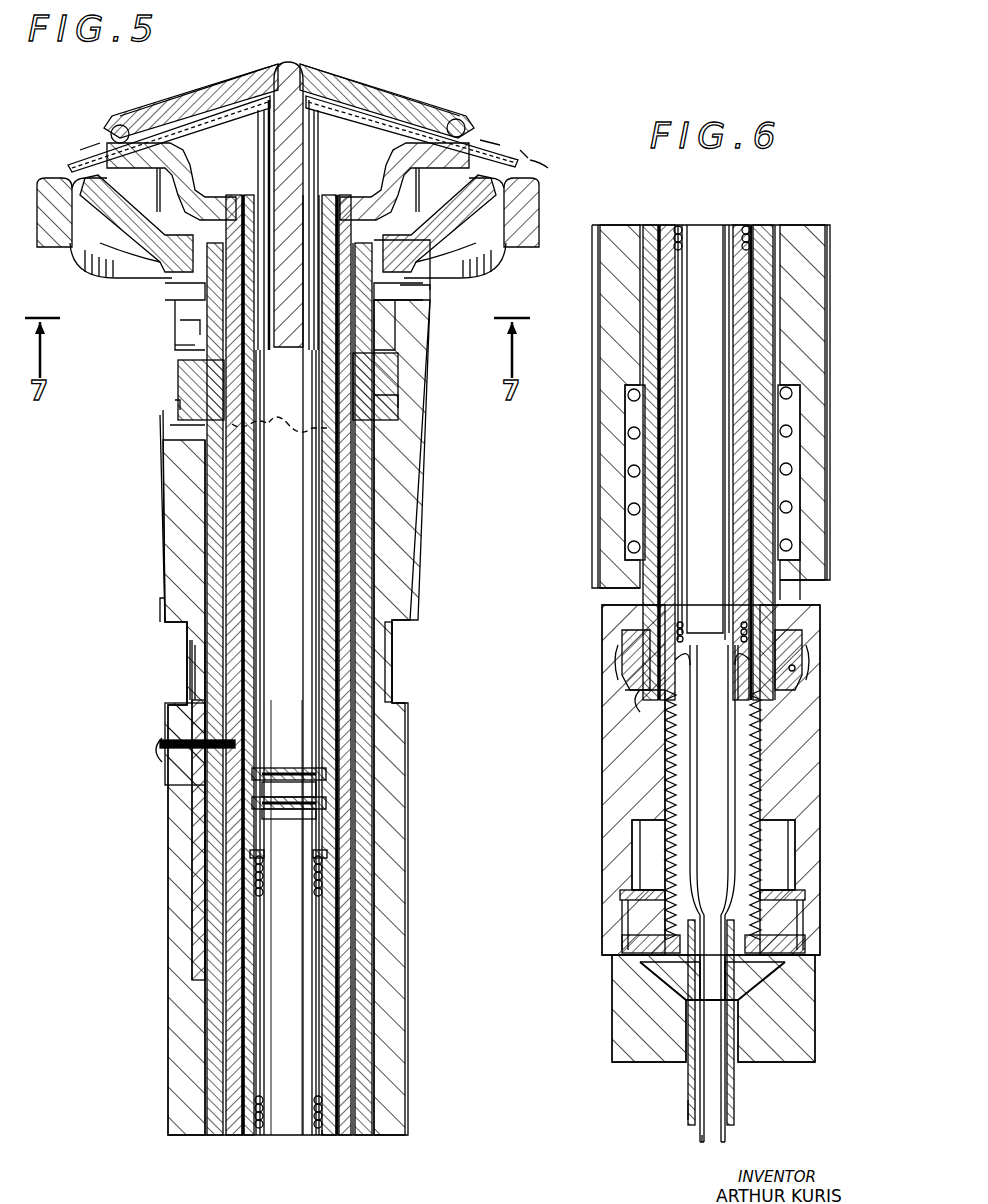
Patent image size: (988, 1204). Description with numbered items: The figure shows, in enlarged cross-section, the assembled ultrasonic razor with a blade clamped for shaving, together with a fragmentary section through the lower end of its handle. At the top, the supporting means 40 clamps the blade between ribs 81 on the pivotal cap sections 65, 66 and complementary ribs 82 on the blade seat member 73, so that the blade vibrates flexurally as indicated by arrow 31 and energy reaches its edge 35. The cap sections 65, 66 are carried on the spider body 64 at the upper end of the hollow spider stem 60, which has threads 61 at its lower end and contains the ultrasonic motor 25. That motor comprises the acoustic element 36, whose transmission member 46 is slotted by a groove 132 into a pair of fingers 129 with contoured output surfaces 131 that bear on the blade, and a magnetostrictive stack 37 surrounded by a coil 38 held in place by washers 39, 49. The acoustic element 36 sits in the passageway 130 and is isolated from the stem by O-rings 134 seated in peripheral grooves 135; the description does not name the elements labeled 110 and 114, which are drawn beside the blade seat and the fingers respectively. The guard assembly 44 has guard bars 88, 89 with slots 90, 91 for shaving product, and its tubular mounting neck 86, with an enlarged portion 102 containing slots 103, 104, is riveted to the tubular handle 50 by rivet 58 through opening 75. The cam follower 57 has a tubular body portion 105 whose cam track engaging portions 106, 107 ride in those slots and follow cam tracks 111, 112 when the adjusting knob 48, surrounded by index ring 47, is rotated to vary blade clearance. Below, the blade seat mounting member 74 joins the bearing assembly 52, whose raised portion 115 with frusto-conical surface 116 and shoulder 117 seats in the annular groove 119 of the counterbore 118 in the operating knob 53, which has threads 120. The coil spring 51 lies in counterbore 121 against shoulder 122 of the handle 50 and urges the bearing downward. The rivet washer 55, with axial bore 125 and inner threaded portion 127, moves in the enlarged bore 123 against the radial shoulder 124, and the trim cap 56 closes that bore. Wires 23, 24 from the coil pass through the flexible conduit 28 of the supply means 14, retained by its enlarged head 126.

In FIG. 6, the supply means 14 is at (690, 1110).
In FIG. 6, the wire 23 is at (720, 1138).
In FIG. 6, the wire 24 is at (702, 1140).
In FIG. 5, the ultrasonic motor 25 is at (322, 578).
In FIG. 6, the ultrasonic motor 25 is at (728, 336).
In FIG. 6, the flexible conduit 28 is at (736, 1095).
In FIG. 5, the arrow 31 is at (48, 166).
In FIG. 5, the edge 35 is at (553, 152).
In FIG. 5, the acoustic element 36 is at (330, 735).
In FIG. 6, the acoustic element 36 is at (730, 528).
In FIG. 5, the magnetostrictive stack 37 is at (288, 1135).
In FIG. 6, the magnetostrictive stack 37 is at (712, 232).
In FIG. 5, the coil 38 is at (345, 1130).
In FIG. 6, the coil 38 is at (660, 230).
In FIG. 5, the washer 39 is at (330, 852).
In FIG. 5, the supporting means 40 is at (112, 130).
In FIG. 5, the guard assembly 44 is at (540, 232).
In FIG. 5, the transmission member 46 is at (312, 664).
In FIG. 5, the index ring 47 is at (395, 688).
In FIG. 5, the adjusting knob 48 is at (418, 600).
In FIG. 6, the washer 49 is at (672, 636).
In FIG. 5, the tubular handle 50 is at (410, 1058).
In FIG. 6, the tubular handle 50 is at (598, 410).
In FIG. 6, the coil spring 51 is at (792, 472).
In FIG. 6, the bearing assembly 52 is at (795, 596).
In FIG. 6, the operating knob 53 is at (810, 796).
In FIG. 6, the rivet washer 55 is at (792, 952).
In FIG. 6, the trim cap 56 is at (805, 1023).
In FIG. 5, the cam follower 57 is at (195, 326).
In FIG. 5, the rivet 58 is at (178, 752).
In FIG. 5, the spider stem 60 is at (330, 925).
In FIG. 6, the spider stem 60 is at (668, 228).
In FIG. 6, the threads 61 is at (762, 745).
In FIG. 5, the spider body 64 is at (300, 64).
In FIG. 5, the cap section 65 is at (355, 84).
In FIG. 5, the cap section 66 is at (252, 74).
In FIG. 5, the blade seat member 73 is at (524, 156).
In FIG. 5, the blade seat mounting member 74 is at (345, 830).
In FIG. 6, the blade seat mounting member 74 is at (774, 228).
In FIG. 5, the opening 75 is at (210, 727).
In FIG. 5, the ribs 81 is at (122, 136).
In FIG. 5, the ribs 82 is at (82, 150).
In FIG. 5, the tubular mounting neck 86 is at (232, 824).
In FIG. 5, the guard bar 88 is at (522, 192).
In FIG. 5, the guard bar 89 is at (55, 192).
In FIG. 5, the slots 90 is at (460, 249).
In FIG. 5, the slots 91 is at (50, 245).
In FIG. 5, the enlarged portion 102 is at (170, 294).
In FIG. 5, the slot 103 is at (315, 430).
In FIG. 5, the slot 104 is at (178, 372).
In FIG. 5, the tubular body portion 105 is at (400, 300).
In FIG. 5, the cam track engaging portion 106 is at (398, 364).
In FIG. 5, the cam track engaging portion 107 is at (175, 404).
In FIG. 5, the lug 110 is at (190, 346).
In FIG. 5, the cam track 111 is at (405, 396).
In FIG. 5, the cam track 112 is at (175, 436).
In FIG. 5, the tube 114 is at (340, 212).
In FIG. 6, the raised portion 115 is at (620, 640).
In FIG. 6, the frusto-conical surface 116 is at (618, 666).
In FIG. 6, the shoulder 117 is at (796, 630).
In FIG. 6, the counterbore 118 is at (642, 700).
In FIG. 6, the annular groove 119 is at (800, 660).
In FIG. 6, the threads 120 is at (660, 780).
In FIG. 6, the counterbore 121 is at (795, 450).
In FIG. 6, the shoulder 122 is at (795, 394).
In FIG. 6, the enlarged bore 123 is at (792, 866).
In FIG. 6, the radial shoulder 124 is at (782, 828).
In FIG. 6, the axial bore 125 is at (645, 968).
In FIG. 6, the enlarged head 126 is at (690, 905).
In FIG. 6, the inner threaded portion 127 is at (660, 930).
In FIG. 5, the fingers 129 is at (258, 158).
In FIG. 5, the passageway 130 is at (250, 612).
In FIG. 6, the passageway 130 is at (678, 312).
In FIG. 5, the output surface 131 is at (254, 100).
In FIG. 5, the groove 132 is at (272, 137).
In FIG. 5, the O-rings 134 is at (322, 773).
In FIG. 5, the peripheral grooves 135 is at (268, 770).